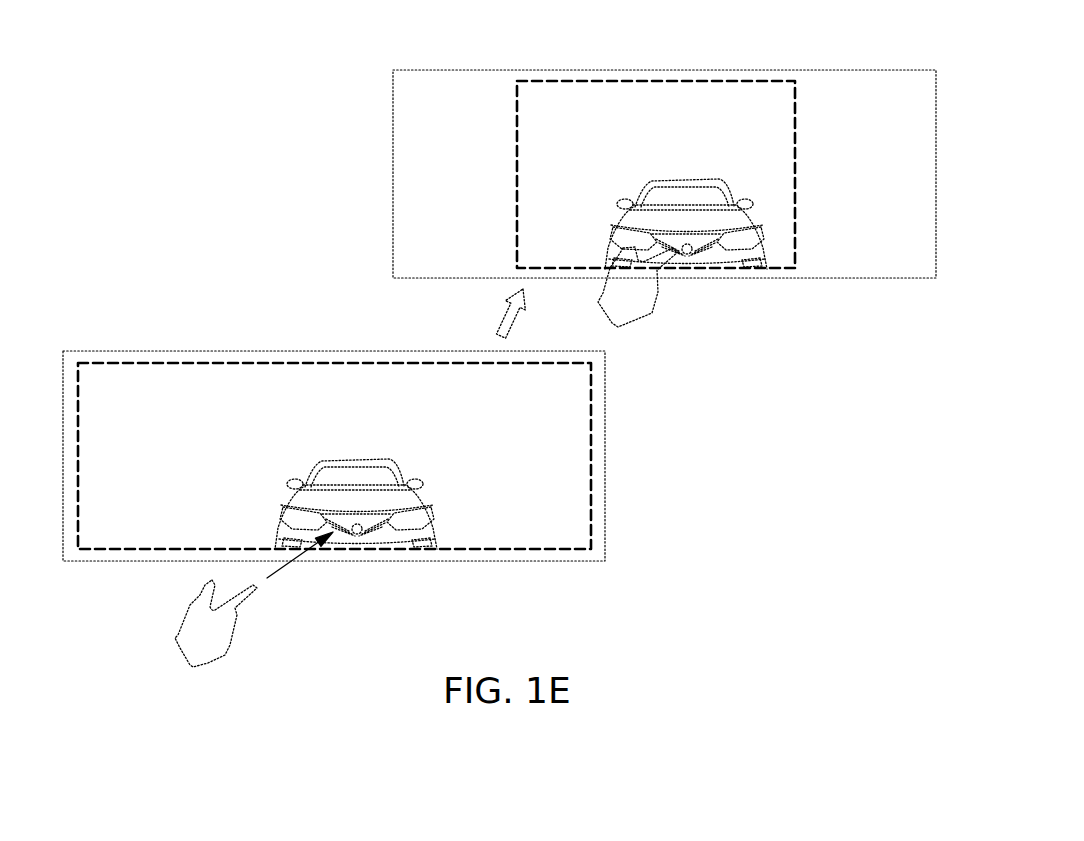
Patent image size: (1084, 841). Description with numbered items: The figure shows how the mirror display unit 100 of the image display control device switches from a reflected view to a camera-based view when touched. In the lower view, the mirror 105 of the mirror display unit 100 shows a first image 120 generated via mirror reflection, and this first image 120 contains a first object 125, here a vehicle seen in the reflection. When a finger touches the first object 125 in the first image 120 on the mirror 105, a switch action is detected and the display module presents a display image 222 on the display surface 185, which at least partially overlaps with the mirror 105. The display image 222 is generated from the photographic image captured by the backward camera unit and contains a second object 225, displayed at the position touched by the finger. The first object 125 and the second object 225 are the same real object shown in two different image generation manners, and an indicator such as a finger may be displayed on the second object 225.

The mirror display unit 100 is at (579, 67).
The mirror 105 is at (600, 458).
The first image 120 is at (530, 400).
The first object 125 is at (335, 514).
The display surface 185 is at (689, 80).
The display image 222 is at (748, 115).
The second object 225 is at (666, 234).